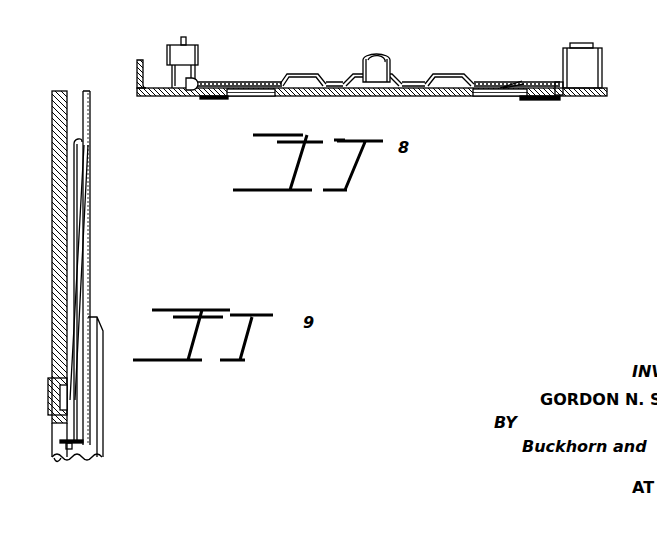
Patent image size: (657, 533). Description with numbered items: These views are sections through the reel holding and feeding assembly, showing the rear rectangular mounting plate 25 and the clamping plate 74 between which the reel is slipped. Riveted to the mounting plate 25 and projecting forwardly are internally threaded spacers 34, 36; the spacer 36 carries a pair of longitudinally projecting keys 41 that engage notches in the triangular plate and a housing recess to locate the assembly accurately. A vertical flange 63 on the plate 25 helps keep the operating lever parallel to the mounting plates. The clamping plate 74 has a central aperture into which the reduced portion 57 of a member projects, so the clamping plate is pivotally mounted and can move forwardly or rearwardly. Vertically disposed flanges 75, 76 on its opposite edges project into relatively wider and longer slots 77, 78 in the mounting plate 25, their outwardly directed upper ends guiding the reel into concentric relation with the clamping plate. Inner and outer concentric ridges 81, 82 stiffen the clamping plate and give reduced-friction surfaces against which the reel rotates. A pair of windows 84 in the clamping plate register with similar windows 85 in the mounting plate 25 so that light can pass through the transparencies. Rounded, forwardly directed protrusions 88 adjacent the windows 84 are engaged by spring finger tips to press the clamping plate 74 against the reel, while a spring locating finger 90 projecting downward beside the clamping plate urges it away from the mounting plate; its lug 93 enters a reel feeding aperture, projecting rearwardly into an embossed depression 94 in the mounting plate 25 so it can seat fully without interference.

In FIG. 8, the rectangular mounting plate 25 is at (362, 93).
In FIG. 9, the rectangular mounting plate 25 is at (58, 222).
In FIG. 8, the internally threaded spacer 34 is at (590, 57).
In FIG. 8, the internally threaded spacer 36 is at (197, 50).
In FIG. 8, the longitudinally projecting keys 41 is at (183, 37).
In FIG. 8, the reduced portion 57 is at (382, 59).
In FIG. 8, the vertical flange 63 is at (140, 60).
In FIG. 8, the clamping plate 74 is at (352, 76).
In FIG. 9, the clamping plate 74 is at (86, 90).
In FIG. 8, the vertical flange 75 is at (188, 90).
In FIG. 9, the vertical flange 75 is at (72, 446).
In FIG. 8, the vertical flange 76 is at (560, 92).
In FIG. 8, the slot 77 is at (205, 98).
In FIG. 9, the slot 77 is at (58, 463).
In FIG. 8, the slot 78 is at (545, 99).
In FIG. 8, the inner concentric ridge 81 is at (414, 83).
In FIG. 9, the outer concentric ridge 82 is at (80, 162).
In FIG. 8, the windows 84 is at (233, 82).
In FIG. 8, the windows 85 is at (265, 95).
In FIG. 8, the rounded protrusions 88 is at (296, 74).
In FIG. 9, the rounded protrusions 88 is at (97, 365).
In FIG. 9, the spring locating finger 90 is at (78, 278).
In FIG. 9, the lug 93 is at (63, 396).
In FIG. 9, the embossed depressions 94 is at (58, 381).